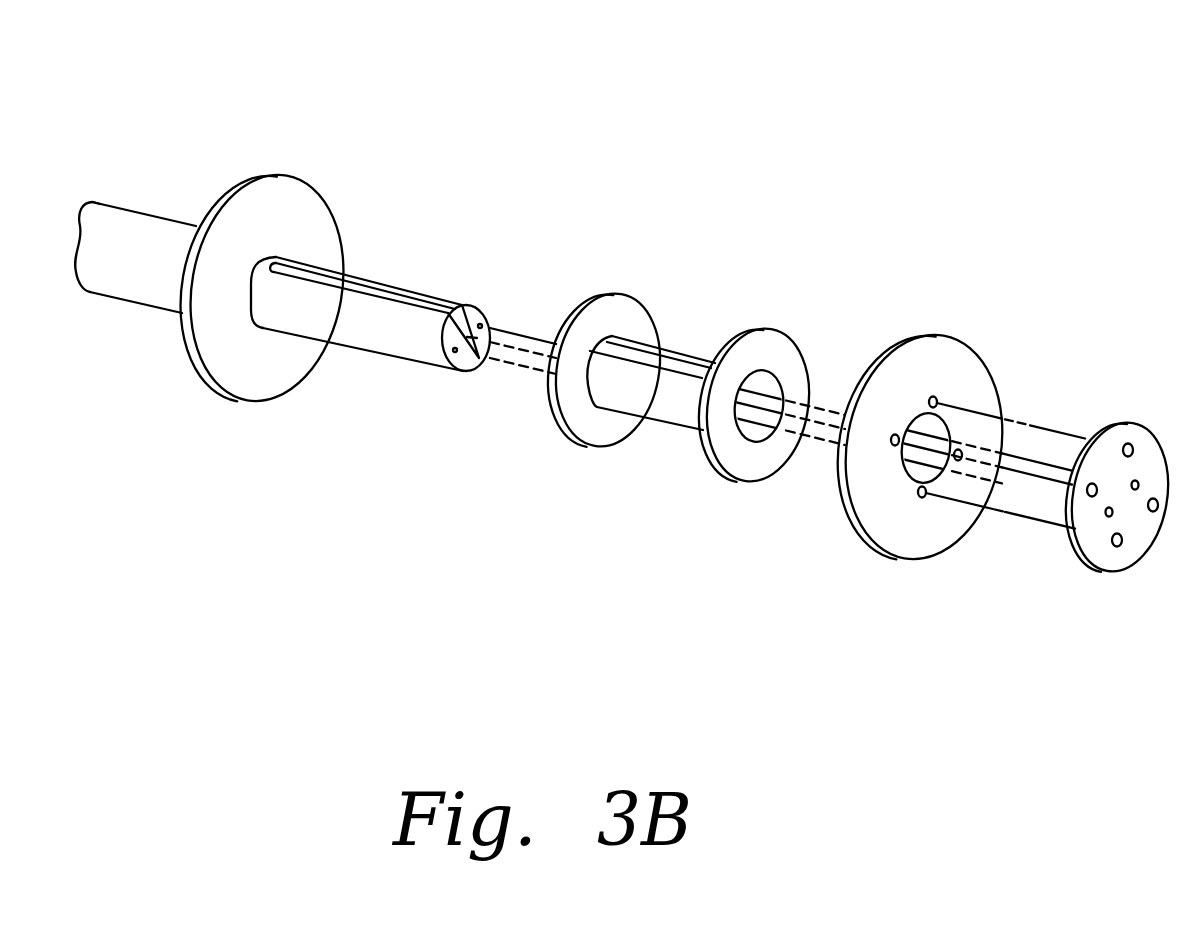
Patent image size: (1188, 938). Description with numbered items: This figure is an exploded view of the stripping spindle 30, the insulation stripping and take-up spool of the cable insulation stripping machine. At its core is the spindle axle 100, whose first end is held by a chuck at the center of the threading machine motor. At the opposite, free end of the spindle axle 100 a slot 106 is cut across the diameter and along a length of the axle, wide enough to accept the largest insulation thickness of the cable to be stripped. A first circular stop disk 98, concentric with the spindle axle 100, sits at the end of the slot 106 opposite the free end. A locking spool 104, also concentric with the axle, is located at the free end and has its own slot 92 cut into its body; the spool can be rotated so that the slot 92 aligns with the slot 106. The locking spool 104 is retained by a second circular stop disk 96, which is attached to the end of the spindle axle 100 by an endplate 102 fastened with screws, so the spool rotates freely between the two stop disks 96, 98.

The stripping spindle 30 is at (783, 135).
The slot 92 is at (658, 355).
The second circular stop disk 96 is at (983, 362).
The first circular stop disk 98 is at (297, 200).
The spindle axle 100 is at (132, 275).
The endplate 102 is at (1108, 573).
The locking spool 104 is at (788, 355).
The slot 106 is at (388, 297).